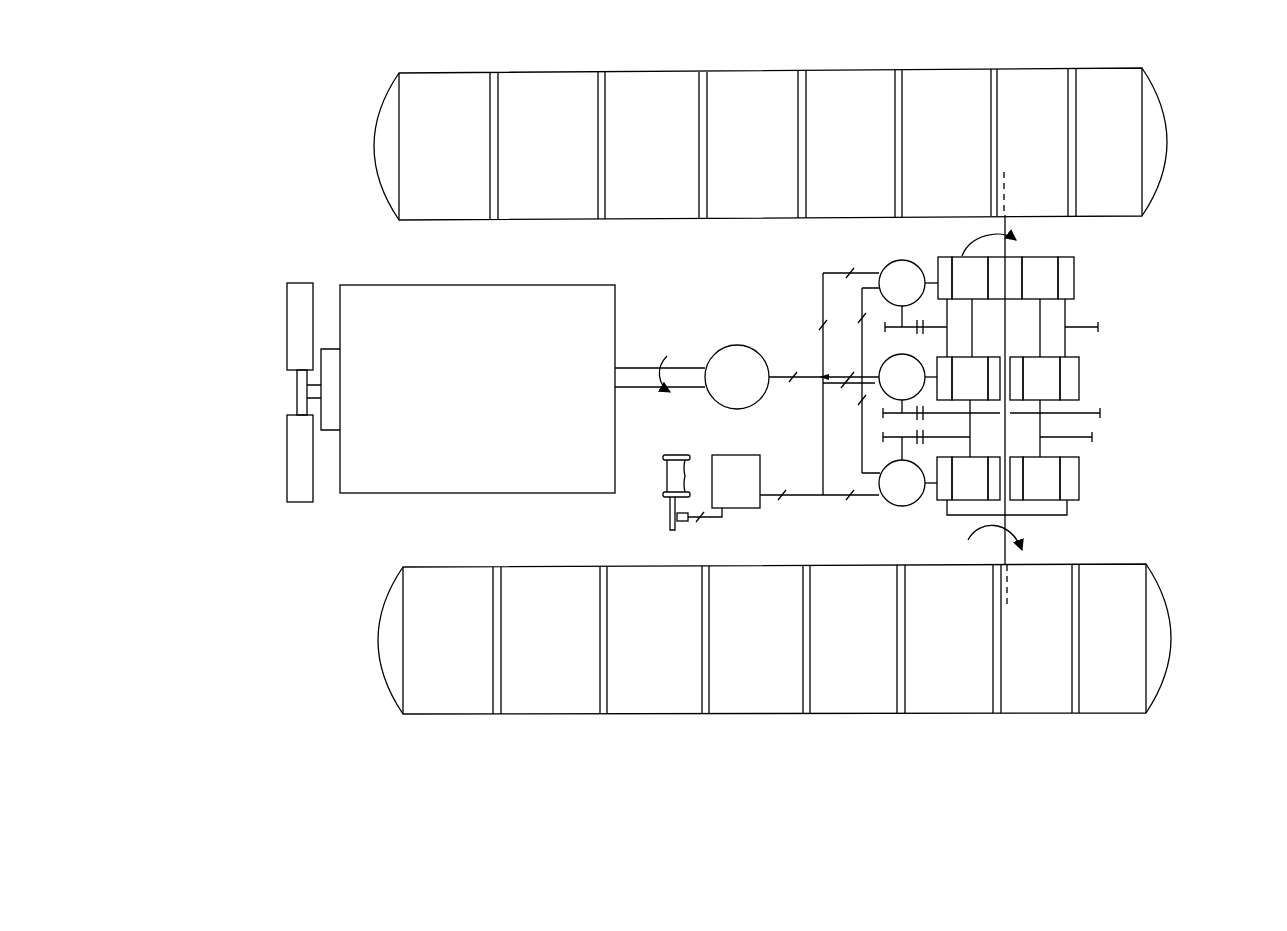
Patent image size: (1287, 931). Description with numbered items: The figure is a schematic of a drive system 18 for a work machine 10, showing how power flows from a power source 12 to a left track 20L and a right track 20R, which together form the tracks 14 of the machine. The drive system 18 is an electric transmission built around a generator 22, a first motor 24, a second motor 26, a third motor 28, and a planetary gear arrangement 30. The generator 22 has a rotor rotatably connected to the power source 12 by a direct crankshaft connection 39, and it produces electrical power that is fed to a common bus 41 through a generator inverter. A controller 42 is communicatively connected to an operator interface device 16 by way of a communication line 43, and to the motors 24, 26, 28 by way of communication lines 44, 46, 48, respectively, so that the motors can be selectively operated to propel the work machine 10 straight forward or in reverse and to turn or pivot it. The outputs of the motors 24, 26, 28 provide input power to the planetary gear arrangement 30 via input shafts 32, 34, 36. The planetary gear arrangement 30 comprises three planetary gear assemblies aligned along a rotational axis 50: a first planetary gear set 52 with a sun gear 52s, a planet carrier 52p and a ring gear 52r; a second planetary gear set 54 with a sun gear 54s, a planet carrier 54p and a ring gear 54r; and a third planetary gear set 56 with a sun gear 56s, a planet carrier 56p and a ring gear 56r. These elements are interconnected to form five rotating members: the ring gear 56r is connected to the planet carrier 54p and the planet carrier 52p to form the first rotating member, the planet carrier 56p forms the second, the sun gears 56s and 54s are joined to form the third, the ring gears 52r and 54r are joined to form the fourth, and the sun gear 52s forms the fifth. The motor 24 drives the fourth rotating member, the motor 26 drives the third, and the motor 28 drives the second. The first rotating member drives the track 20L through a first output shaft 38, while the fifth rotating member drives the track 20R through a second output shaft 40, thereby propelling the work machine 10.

The work machine 10 is at (330, 690).
The power source 12 is at (463, 390).
The tracks 14 is at (1163, 75).
The operator interface device 16 is at (666, 486).
The drive system 18 is at (658, 270).
The right track 20R is at (1026, 86).
The left track 20L is at (945, 700).
The generator 22 is at (742, 346).
The first motor 24 is at (889, 262).
The second motor 26 is at (890, 409).
The third motor 28 is at (893, 507).
The planetary gear arrangement 30 is at (1200, 207).
The input shaft 32 is at (906, 320).
The input shaft 34 is at (906, 408).
The input shaft 36 is at (905, 440).
The first output shaft 38 is at (1004, 548).
The direct crankshaft connection 39 is at (636, 378).
The second output shaft 40 is at (1012, 236).
The common bus 41 is at (858, 361).
The controller 42 is at (723, 491).
The communication line 43 is at (724, 510).
The communication line 44 is at (825, 271).
The communication line 46 is at (830, 385).
The communication line 48 is at (843, 497).
The rotational axis 50 is at (1006, 179).
The first planetary gear set 52 is at (1148, 270).
The planet carrier 52p is at (1005, 278).
The ring gear 52r is at (944, 266).
The sun gear 52s is at (1005, 278).
The second planetary gear set 54 is at (1160, 372).
The planet carrier 54p is at (1006, 378).
The ring gear 54r is at (942, 374).
The sun gear 54s is at (1013, 358).
The third planetary gear set 56 is at (1160, 470).
The planet carrier 56p is at (1006, 478).
The ring gear 56r is at (1080, 482).
The sun gear 56s is at (1018, 456).